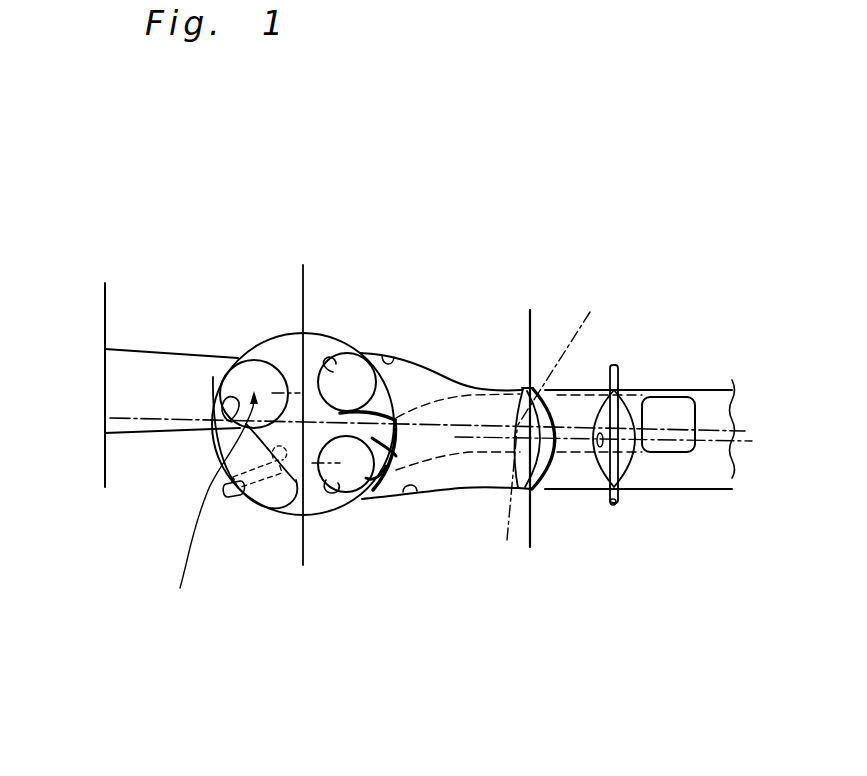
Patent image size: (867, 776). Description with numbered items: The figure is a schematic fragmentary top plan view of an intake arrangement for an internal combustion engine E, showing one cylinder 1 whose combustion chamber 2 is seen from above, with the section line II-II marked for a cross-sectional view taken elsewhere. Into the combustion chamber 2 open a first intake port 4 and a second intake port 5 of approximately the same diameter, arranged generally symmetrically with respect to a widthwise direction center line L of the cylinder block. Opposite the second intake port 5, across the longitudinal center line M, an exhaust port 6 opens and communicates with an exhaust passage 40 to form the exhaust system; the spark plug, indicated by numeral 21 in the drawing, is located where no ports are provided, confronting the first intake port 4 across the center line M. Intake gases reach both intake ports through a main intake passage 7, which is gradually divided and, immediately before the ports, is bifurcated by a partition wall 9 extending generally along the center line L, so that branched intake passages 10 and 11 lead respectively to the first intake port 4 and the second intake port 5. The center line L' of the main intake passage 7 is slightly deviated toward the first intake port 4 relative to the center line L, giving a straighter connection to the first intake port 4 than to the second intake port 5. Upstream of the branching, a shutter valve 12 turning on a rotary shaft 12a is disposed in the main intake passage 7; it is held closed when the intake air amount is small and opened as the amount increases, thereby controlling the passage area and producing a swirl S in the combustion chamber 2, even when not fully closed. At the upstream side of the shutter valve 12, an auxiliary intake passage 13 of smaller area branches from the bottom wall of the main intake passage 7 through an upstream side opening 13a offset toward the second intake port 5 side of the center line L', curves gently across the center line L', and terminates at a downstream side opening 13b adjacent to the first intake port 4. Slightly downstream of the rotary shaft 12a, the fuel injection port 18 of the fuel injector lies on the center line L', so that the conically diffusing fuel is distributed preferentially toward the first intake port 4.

The exhaust passage 40 is at (151, 351).
The cylinder 1 is at (278, 326).
The longitudinal center line M is at (303, 304).
The second intake port 5 is at (337, 353).
The branched intake passage 11 is at (388, 357).
The partition wall 9 is at (420, 365).
The auxiliary intake passage 13 is at (450, 397).
The internal combustion engine E is at (541, 333).
The widthwise direction center line L is at (559, 304).
The rotary shaft 12a is at (624, 393).
The upstream side opening 13a is at (658, 398).
The exhaust port 6 is at (230, 421).
The swirl S is at (212, 506).
The pin member 21 is at (258, 477).
The combustion chamber 2 is at (290, 490).
The first intake port 4 is at (334, 494).
The downstream side opening 13b is at (372, 484).
The branched intake passage 10 is at (417, 492).
The center line of the intake passage L' is at (502, 551).
The fuel injection port 18 is at (598, 488).
The shutter valve 12 is at (634, 489).
The main intake passage 7 is at (682, 467).
The section line II is at (65, 420).